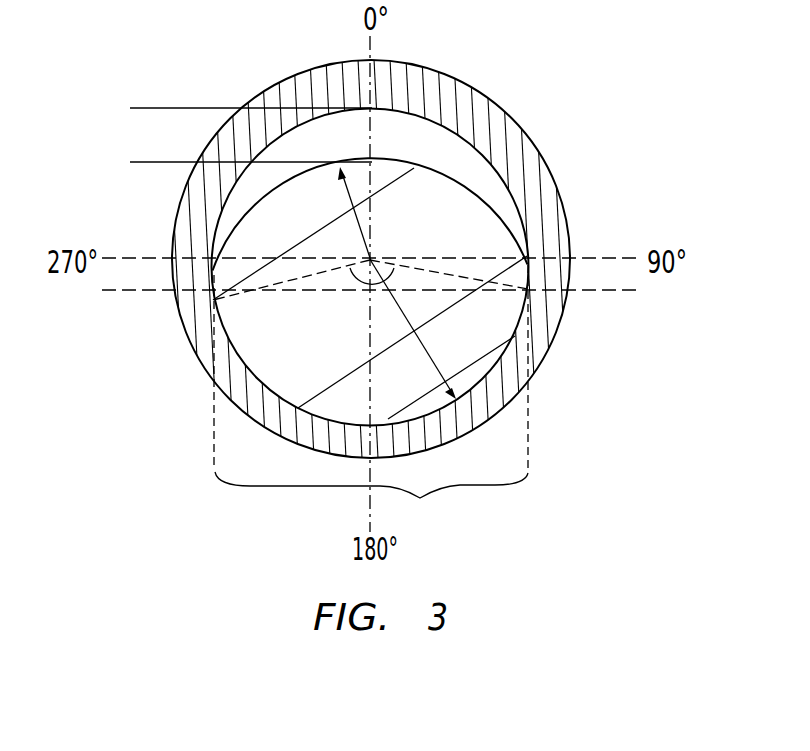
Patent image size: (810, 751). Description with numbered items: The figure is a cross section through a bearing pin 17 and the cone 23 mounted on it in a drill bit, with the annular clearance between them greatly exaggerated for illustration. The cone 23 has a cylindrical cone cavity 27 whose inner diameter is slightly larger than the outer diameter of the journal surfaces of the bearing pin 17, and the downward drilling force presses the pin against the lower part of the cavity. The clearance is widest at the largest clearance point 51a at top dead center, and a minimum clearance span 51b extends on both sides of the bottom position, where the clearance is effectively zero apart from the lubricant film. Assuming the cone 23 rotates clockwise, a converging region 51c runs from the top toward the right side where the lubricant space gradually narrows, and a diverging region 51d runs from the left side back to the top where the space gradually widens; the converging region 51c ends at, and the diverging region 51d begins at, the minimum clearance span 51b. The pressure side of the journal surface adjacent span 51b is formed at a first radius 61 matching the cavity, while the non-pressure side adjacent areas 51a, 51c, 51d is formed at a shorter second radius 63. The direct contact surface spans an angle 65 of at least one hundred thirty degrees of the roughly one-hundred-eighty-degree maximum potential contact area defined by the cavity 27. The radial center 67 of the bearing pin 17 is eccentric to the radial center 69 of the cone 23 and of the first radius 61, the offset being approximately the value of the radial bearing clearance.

The bearing pin 17 is at (238, 364).
The cone 23 is at (503, 125).
The cone cavity 27 is at (413, 414).
The largest clearance point 51a is at (152, 196).
The minimum clearance span 51b is at (371, 401).
The converging region 51c is at (510, 222).
The diverging region 51d is at (235, 213).
The first radius 61 is at (418, 335).
The second radius 63 is at (343, 190).
The angle 65 is at (385, 270).
The radial center of the bearing pin 67 is at (364, 295).
The radial center of the cone 69 is at (375, 258).